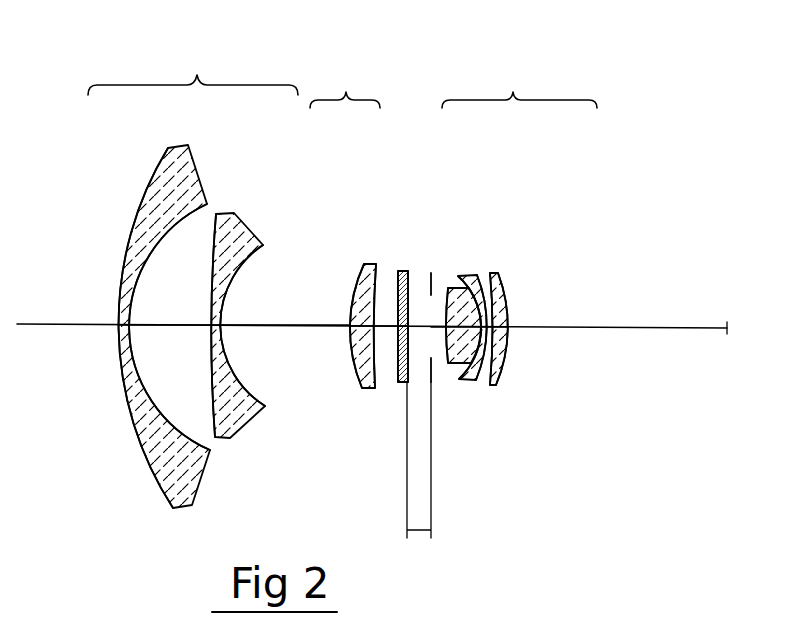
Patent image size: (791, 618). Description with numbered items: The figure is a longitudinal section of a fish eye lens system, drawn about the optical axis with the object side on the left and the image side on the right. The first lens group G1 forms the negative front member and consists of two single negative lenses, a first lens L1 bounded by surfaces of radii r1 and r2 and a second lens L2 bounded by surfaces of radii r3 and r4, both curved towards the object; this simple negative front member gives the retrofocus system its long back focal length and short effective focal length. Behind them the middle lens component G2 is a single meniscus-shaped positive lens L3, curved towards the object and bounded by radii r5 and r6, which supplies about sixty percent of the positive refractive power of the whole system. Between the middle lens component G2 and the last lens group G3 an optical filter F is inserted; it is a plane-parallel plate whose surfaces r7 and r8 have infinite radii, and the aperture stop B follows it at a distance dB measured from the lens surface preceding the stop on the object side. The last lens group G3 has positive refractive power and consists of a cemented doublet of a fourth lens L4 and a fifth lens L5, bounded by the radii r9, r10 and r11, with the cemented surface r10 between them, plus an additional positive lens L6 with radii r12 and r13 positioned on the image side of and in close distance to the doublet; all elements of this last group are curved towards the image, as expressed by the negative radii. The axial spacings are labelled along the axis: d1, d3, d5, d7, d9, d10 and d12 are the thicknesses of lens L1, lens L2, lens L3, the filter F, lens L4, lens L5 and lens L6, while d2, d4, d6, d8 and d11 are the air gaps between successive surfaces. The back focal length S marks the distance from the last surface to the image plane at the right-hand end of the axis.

The first lens group G1 is at (196, 274).
The middle lens component G2 is at (343, 223).
The last lens group G3 is at (534, 222).
The first lens L1 is at (181, 150).
The second lens L2 is at (242, 232).
The third lens L3 is at (374, 265).
The fourth lens L4 is at (460, 276).
The fifth lens L5 is at (476, 277).
The additional positive lens L6 is at (496, 274).
The optical filter F is at (403, 269).
The aperture stop B is at (430, 271).
The radius of the first lens surface r1 is at (155, 172).
The radius of the second lens surface r2 is at (196, 206).
The radius of the third lens surface r3 is at (216, 224).
The radius of the fourth lens surface r4 is at (266, 255).
The radius of the fifth lens surface r5 is at (360, 278).
The radius of the sixth lens surface r6 is at (377, 272).
The radius of the seventh lens surface r7 is at (398, 273).
The radius of the eighth lens surface r8 is at (411, 271).
The radius of the ninth lens surface r9 is at (445, 285).
The radius of the tenth lens surface r10 is at (470, 282).
The radius of the eleventh lens surface r11 is at (484, 281).
The radius of the twelfth lens surface r12 is at (493, 277).
The radius of the thirteenth lens surface r13 is at (506, 305).
The distance between the first and second lens surface d1 is at (120, 335).
The distance between the second and third lens surface d2 is at (170, 325).
The distance between the third and fourth lens surface d3 is at (227, 438).
The distance between the fourth and fifth lens surface d4 is at (290, 325).
The distance between the fifth and sixth lens surface d5 is at (357, 372).
The distance between the sixth and seventh lens surface d6 is at (384, 388).
The distance between the seventh and eighth lens surface d7 is at (400, 384).
The distance between the eighth and ninth lens surface d8 is at (442, 330).
The distance between the ninth and tenth lens surface d9 is at (467, 382).
The distance between the tenth and eleventh lens surface d10 is at (475, 383).
The distance between the eleventh and twelfth lens surface d11 is at (486, 386).
The distance between the twelfth and thirteenth lens surface d12 is at (502, 384).
The distance between the aperture stop and the preceding lens surface dB is at (421, 532).
The back focal length S is at (634, 283).